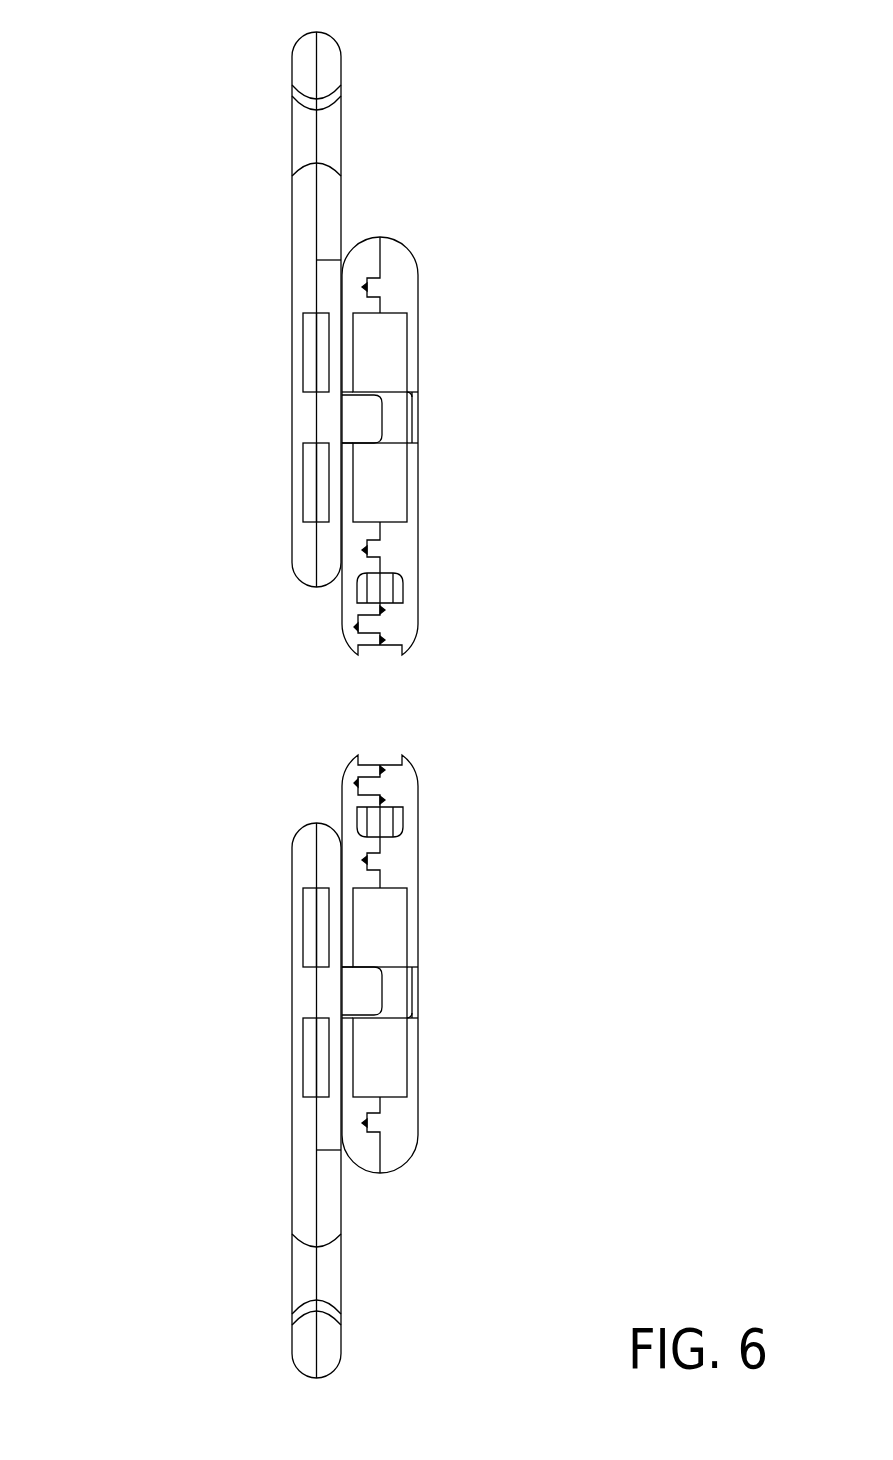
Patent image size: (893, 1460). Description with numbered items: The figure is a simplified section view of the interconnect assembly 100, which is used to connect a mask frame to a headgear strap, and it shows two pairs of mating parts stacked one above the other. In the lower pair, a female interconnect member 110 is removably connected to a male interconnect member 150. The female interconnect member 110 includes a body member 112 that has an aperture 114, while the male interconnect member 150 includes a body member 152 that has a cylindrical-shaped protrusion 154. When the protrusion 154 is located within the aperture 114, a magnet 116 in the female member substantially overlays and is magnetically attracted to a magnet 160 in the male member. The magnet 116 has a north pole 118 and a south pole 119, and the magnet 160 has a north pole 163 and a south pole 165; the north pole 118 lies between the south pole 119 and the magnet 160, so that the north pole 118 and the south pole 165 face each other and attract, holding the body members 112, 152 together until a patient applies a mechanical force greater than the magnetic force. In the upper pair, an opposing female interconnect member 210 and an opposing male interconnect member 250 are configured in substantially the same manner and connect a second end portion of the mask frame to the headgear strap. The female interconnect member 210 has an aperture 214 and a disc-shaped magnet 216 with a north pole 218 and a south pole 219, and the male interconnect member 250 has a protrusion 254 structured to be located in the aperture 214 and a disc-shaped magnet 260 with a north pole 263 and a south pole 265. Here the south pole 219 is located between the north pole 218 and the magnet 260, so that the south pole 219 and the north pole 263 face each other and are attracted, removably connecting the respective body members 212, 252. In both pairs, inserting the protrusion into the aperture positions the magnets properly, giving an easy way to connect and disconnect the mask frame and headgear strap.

The interconnect assembly 100 is at (271, 1043).
The female interconnect member 110 is at (344, 941).
The body member 112 is at (422, 827).
The aperture 114 is at (360, 980).
The magnet 116 is at (412, 1038).
The north pole 118 is at (362, 927).
The south pole 119 is at (390, 900).
The male interconnect member 150 is at (259, 1058).
The body member 152 is at (288, 1213).
The protrusion 154 is at (390, 995).
The magnet 160 is at (310, 1098).
The north pole 163 is at (305, 925).
The south pole 165 is at (318, 898).
The female interconnect member 210 is at (432, 393).
The body member 212 is at (420, 548).
The aperture 214 is at (410, 400).
The disc-shaped magnet 216 is at (412, 455).
The north pole 218 is at (393, 330).
The south pole 219 is at (362, 378).
The male interconnect member 250 is at (269, 295).
The body member 252 is at (292, 548).
The protrusion 254 is at (388, 425).
The disc-shaped magnet 260 is at (312, 498).
The north pole 263 is at (322, 325).
The south pole 265 is at (310, 350).